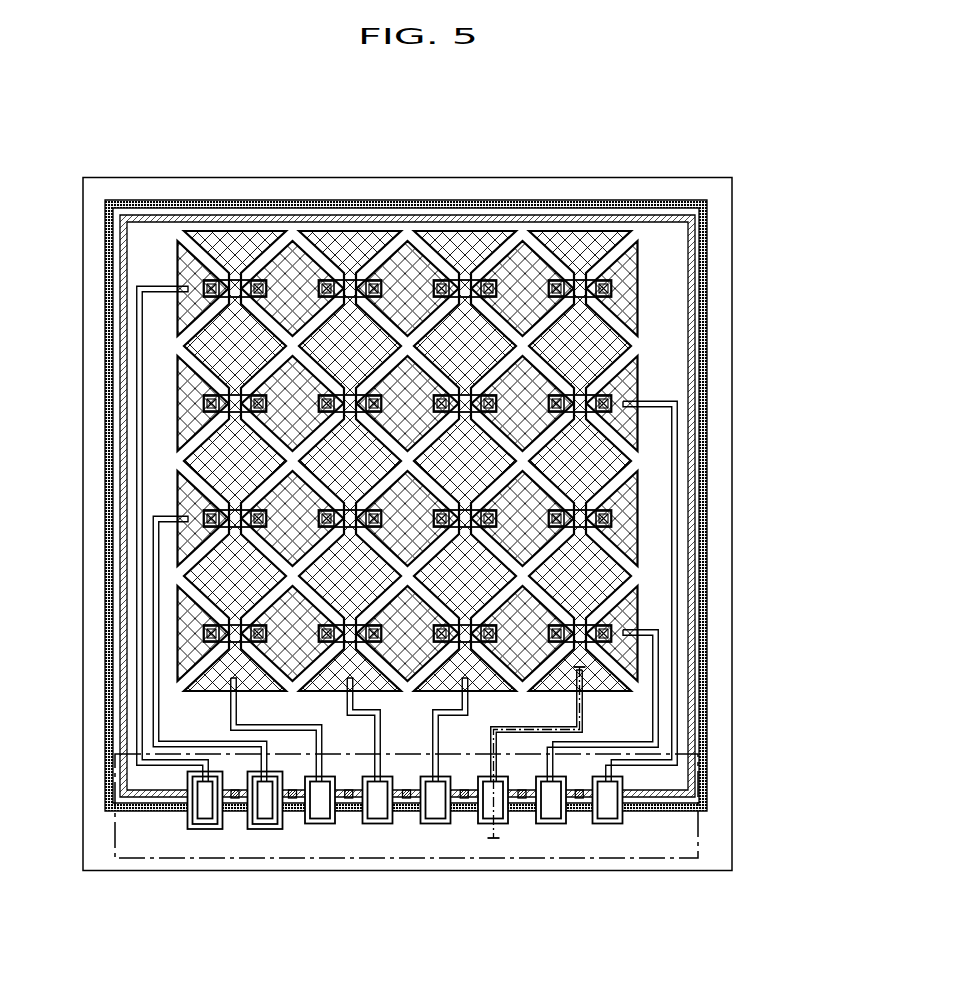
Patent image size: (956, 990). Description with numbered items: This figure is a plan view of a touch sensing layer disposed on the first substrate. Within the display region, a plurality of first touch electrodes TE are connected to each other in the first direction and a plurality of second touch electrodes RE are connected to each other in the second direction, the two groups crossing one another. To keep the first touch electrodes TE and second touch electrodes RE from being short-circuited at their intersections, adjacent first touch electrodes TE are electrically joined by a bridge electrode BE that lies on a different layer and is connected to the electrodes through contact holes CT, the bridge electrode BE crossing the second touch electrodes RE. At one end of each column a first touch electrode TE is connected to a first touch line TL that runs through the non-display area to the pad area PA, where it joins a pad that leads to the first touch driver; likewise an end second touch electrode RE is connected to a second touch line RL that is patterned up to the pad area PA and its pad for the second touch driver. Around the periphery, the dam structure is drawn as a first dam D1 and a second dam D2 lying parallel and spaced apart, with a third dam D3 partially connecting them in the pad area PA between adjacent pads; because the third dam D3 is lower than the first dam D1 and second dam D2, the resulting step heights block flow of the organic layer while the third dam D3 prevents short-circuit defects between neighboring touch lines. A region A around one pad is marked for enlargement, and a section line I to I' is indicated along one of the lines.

The first touch electrode TE is at (628, 290).
The second touch electrode RE is at (450, 248).
The bridge electrode BE is at (465, 288).
The contact hole CT is at (358, 287).
The first touch line TL is at (673, 472).
The second touch line RL is at (580, 708).
The pad area PA is at (413, 862).
The region A is at (200, 830).
The first dam D1 is at (650, 793).
The second dam D2 is at (692, 807).
The third dam D3 is at (582, 798).
The section line I is at (534, 759).
The section line I' is at (588, 669).